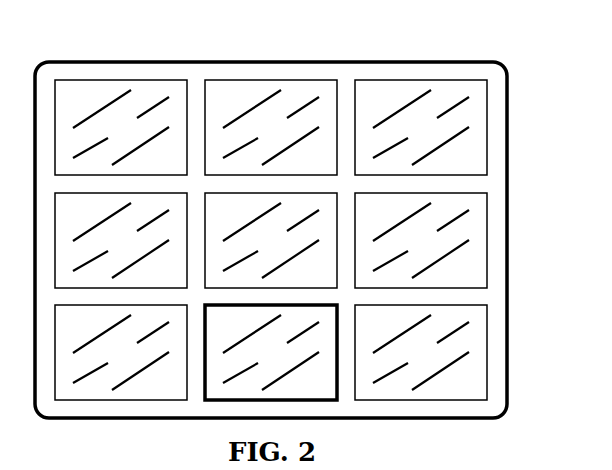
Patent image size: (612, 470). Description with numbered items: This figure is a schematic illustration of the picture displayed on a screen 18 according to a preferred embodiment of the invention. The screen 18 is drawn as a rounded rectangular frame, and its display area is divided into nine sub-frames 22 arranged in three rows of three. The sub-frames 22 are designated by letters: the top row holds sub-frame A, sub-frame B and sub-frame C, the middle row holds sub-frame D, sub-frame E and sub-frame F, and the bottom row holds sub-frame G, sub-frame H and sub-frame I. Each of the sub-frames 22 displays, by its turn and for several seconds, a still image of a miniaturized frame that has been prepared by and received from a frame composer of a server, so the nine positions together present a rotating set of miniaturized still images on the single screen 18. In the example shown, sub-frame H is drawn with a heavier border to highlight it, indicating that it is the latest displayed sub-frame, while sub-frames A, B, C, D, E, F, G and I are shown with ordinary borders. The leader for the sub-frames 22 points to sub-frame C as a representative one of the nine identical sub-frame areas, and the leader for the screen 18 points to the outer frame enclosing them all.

The screen 18 is at (468, 62).
The sub-frames 22 is at (457, 134).
The sub-frame A is at (121, 127).
The sub-frame B is at (271, 127).
The sub-frame C is at (421, 127).
The sub-frame D is at (121, 240).
The sub-frame E is at (271, 240).
The sub-frame F is at (421, 240).
The sub-frame G is at (121, 352).
The sub-frame H is at (271, 352).
The sub-frame I is at (421, 352).